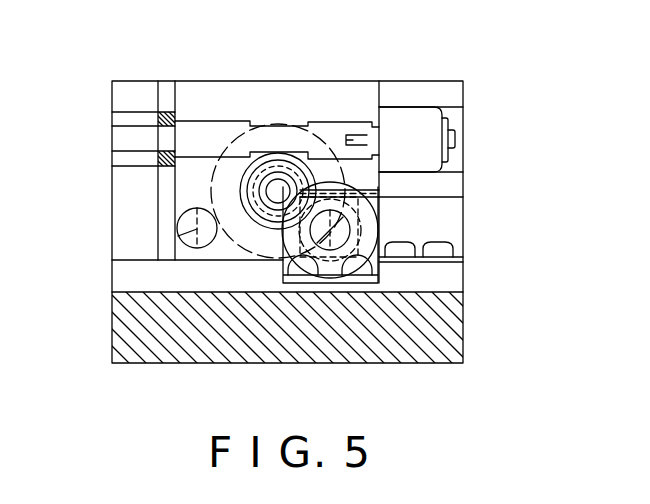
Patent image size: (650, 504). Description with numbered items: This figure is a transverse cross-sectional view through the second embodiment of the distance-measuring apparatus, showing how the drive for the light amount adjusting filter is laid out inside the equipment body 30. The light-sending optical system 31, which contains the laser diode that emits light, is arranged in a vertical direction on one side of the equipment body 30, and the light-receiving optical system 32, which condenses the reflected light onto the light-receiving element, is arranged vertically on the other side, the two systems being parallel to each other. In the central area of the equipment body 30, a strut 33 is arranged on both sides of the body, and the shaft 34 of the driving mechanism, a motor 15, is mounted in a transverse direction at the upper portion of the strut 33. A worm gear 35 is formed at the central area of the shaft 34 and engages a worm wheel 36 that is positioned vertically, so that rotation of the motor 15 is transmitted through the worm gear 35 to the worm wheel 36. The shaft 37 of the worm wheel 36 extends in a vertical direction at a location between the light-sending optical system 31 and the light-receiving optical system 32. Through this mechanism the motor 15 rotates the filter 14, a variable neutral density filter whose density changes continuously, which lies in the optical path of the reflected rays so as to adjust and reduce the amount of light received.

The filter 14 is at (213, 167).
The motor 15 is at (420, 153).
The equipment body 30 is at (436, 328).
The light-sending optical system 31 is at (178, 236).
The light-receiving optical system 32 is at (334, 250).
The strut 33 is at (137, 98).
The shaft 34 is at (221, 108).
The worm gear 35 is at (281, 124).
The worm wheel 36 is at (291, 204).
The shaft of the worm wheel 37 is at (267, 200).